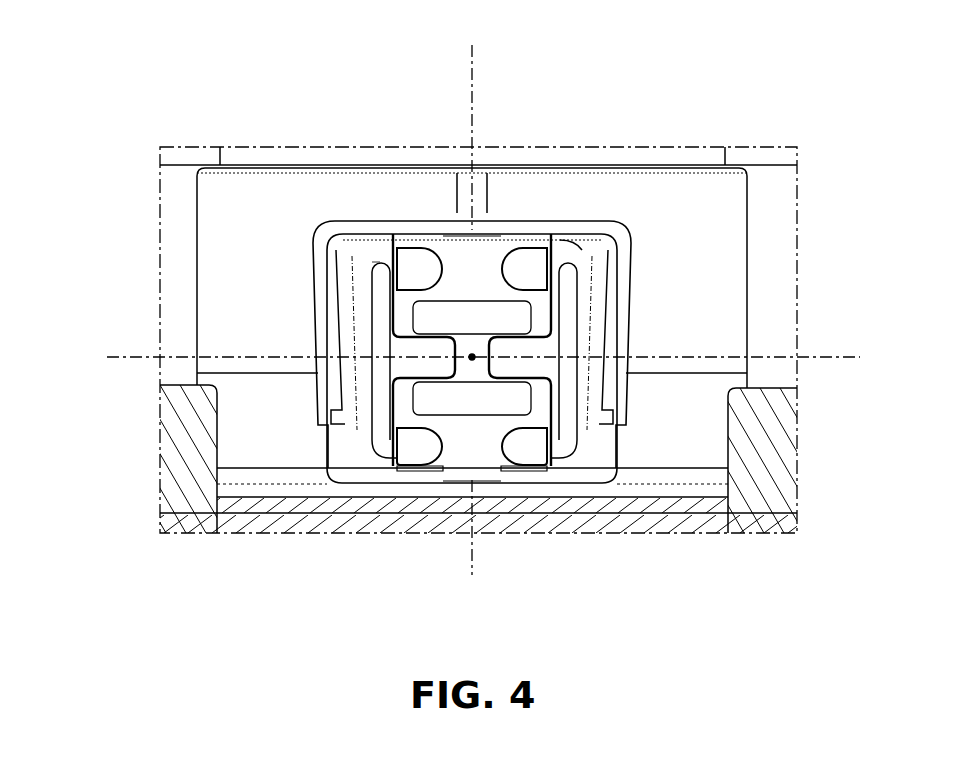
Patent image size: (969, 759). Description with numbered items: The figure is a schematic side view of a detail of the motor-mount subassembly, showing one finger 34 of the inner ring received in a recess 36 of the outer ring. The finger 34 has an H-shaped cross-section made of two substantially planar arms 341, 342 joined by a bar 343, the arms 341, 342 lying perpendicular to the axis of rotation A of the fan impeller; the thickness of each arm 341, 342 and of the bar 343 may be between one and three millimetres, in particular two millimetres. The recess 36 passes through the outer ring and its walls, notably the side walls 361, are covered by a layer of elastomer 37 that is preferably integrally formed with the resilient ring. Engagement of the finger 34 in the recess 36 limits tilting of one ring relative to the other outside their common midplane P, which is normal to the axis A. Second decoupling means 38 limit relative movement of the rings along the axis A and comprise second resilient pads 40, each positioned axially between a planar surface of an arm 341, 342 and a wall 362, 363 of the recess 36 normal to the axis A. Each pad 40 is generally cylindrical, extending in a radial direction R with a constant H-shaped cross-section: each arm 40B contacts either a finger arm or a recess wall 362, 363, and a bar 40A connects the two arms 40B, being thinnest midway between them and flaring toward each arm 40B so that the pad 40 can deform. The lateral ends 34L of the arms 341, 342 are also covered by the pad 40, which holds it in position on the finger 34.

The finger 34 is at (98, 373).
The arm 341 is at (445, 322).
The arm 342 is at (427, 385).
The bar 343 is at (447, 350).
The lateral end 34L is at (397, 318).
The recess 36 is at (577, 473).
The side wall 361 is at (658, 282).
The wall 362 is at (580, 260).
The wall 363 is at (342, 465).
The layer of elastomer 37 is at (628, 247).
The second decoupling means 38 is at (371, 261).
The second resilient pad 40 is at (457, 97).
The bar 40A is at (470, 267).
The arm 40B is at (383, 262).
The axis of rotation A is at (480, 77).
The common midplane P is at (835, 353).
The radial direction R is at (473, 355).